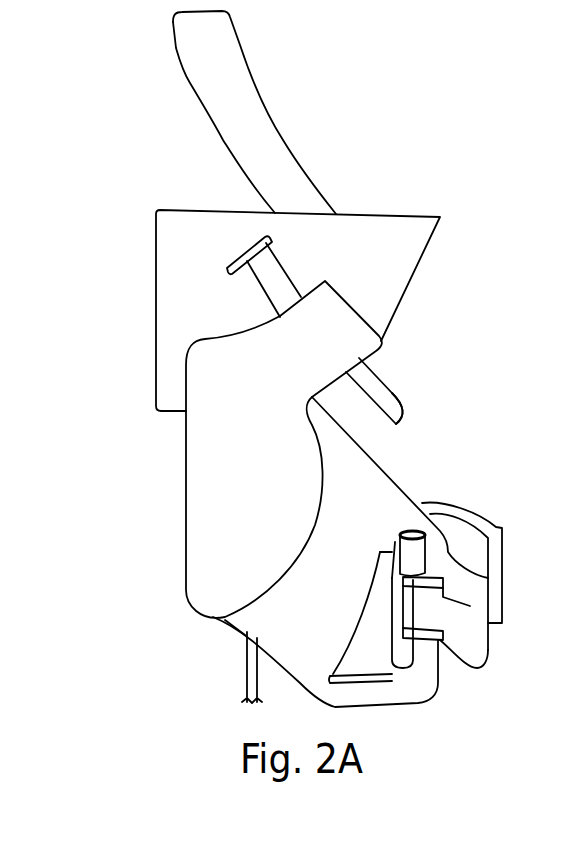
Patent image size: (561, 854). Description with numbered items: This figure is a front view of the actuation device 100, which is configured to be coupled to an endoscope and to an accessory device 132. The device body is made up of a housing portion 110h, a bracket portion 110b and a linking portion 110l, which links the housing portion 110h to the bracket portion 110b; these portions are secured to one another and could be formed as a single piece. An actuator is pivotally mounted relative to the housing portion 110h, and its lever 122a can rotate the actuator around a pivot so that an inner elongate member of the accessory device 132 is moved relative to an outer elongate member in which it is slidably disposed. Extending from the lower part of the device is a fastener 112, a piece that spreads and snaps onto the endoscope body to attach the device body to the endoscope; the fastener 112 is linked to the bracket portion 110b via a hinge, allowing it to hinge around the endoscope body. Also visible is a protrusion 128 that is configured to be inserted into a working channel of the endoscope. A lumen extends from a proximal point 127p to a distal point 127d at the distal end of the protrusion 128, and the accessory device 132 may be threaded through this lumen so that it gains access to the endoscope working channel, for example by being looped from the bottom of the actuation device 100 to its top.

The actuation device 100 is at (154, 448).
The housing portion 110h is at (198, 213).
The linking portion 110l is at (186, 527).
The bracket portion 110b is at (241, 621).
The fastener 112 is at (465, 517).
The lever 122a is at (255, 101).
The proximal point 127p is at (247, 253).
The distal point 127d is at (410, 420).
The protrusion 128 is at (393, 403).
The accessory device 132 is at (230, 689).